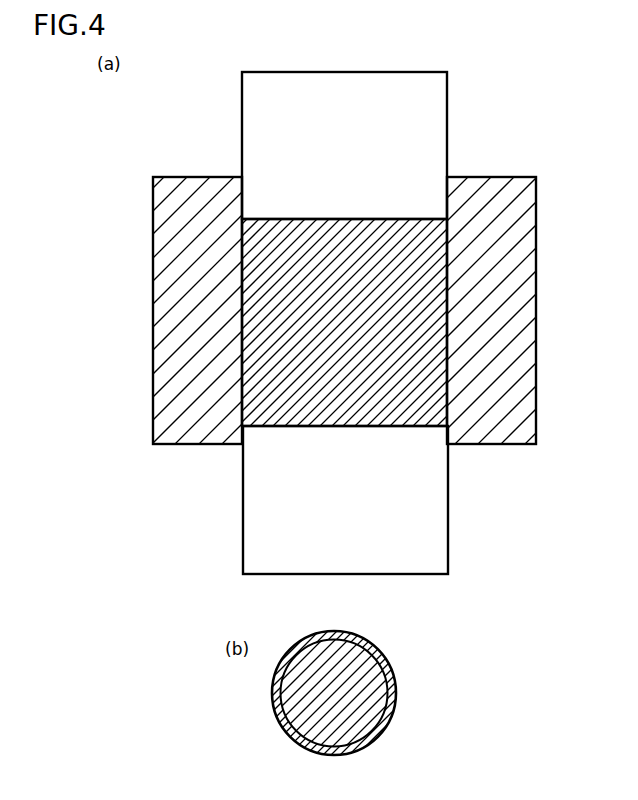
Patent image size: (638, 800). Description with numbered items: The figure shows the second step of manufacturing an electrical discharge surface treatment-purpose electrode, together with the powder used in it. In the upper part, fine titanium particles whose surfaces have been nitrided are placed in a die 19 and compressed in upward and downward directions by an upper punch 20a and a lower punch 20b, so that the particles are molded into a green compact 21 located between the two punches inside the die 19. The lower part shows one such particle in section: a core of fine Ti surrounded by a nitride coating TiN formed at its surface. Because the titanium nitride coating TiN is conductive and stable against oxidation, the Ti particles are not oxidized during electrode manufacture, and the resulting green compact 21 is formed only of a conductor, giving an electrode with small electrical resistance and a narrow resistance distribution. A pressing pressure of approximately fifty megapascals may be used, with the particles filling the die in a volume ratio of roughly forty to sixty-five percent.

The die 19 is at (178, 252).
The upper punch 20a is at (443, 103).
The lower punch 20b is at (443, 523).
The green compact 21 is at (423, 255).
The nitride coating TiN is at (392, 680).
The fine Ti particle Ti is at (363, 723).